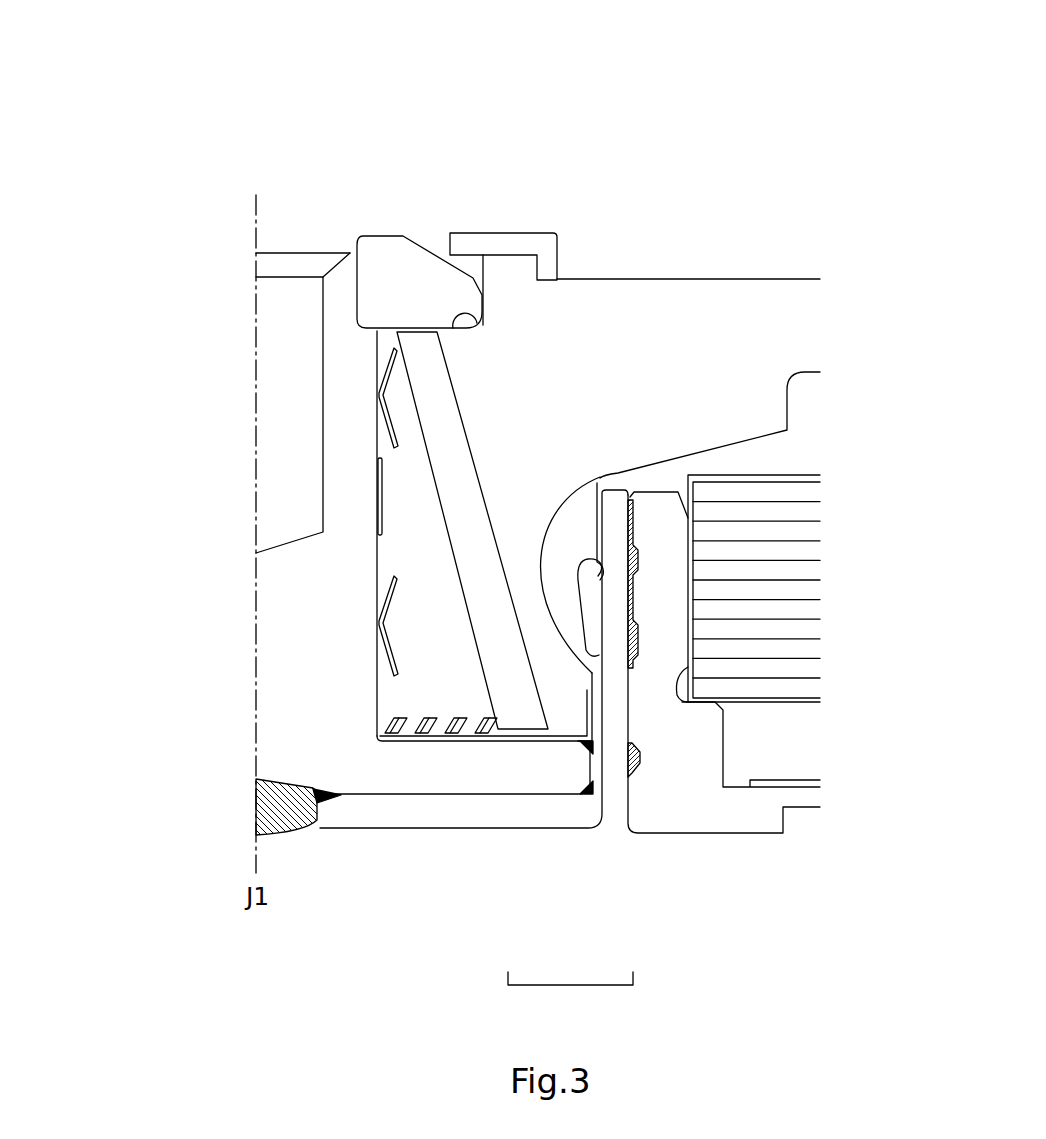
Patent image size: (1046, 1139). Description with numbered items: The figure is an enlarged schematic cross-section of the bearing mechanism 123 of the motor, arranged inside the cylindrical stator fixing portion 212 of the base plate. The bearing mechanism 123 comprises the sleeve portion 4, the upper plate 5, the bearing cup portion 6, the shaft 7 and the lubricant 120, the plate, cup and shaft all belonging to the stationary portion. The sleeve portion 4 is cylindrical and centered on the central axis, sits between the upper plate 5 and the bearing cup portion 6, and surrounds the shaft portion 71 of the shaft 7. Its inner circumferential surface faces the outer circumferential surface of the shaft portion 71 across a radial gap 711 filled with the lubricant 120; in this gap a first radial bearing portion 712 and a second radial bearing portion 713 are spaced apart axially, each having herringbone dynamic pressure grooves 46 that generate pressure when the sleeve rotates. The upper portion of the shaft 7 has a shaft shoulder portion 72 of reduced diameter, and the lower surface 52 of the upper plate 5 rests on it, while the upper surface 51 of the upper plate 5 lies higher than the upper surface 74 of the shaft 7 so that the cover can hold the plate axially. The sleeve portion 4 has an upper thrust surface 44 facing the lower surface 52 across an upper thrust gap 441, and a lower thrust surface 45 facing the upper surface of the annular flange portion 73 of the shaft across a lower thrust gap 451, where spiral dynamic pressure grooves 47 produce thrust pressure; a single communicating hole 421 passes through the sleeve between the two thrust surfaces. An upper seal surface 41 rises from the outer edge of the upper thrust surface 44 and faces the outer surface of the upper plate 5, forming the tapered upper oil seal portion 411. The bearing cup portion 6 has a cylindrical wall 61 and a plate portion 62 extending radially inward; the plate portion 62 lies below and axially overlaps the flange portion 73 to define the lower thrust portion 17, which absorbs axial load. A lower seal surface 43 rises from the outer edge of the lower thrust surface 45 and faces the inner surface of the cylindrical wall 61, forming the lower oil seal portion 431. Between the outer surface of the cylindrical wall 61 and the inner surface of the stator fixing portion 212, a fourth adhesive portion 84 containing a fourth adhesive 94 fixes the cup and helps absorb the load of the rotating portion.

The bearing mechanism 123 is at (185, 112).
The shaft 7 is at (135, 270).
The bearing cup portion 6 is at (685, 1006).
The upper surface of the shaft 74 is at (347, 252).
The shaft shoulder portion 72 is at (357, 297).
The shaft portion 71 is at (357, 510).
The first radial bearing portion 712 is at (375, 423).
The radial gap 711 is at (385, 605).
The second radial bearing portion 713 is at (378, 637).
The upper plate 5 is at (387, 235).
The upper surface of the upper plate 51 is at (383, 273).
The lower surface of the upper plate 52 is at (357, 297).
The upper oil seal portion 411 is at (476, 289).
The upper seal surface 41 is at (457, 233).
The upper thrust surface 44 is at (483, 325).
The upper thrust gap 441 is at (443, 340).
The communicating hole 421 is at (450, 453).
The sleeve portion 4 is at (430, 593).
The dynamic pressure grooves 46 is at (378, 395).
The dynamic pressure grooves 47 is at (432, 733).
The lower thrust surface 45 is at (432, 733).
The lower thrust gap 451 is at (523, 738).
The flange portion 73 is at (505, 768).
The plate portion 62 is at (520, 813).
The cylindrical wall 61 is at (593, 630).
The lower thrust portion 17 is at (570, 985).
The lower seal surface 43 is at (608, 686).
The lower oil seal portion 431 is at (612, 708).
The fourth adhesive portion 84 is at (632, 607).
The fourth adhesive 94 is at (637, 547).
The stator fixing portion 212 is at (667, 648).
The lubricant 120 is at (597, 483).